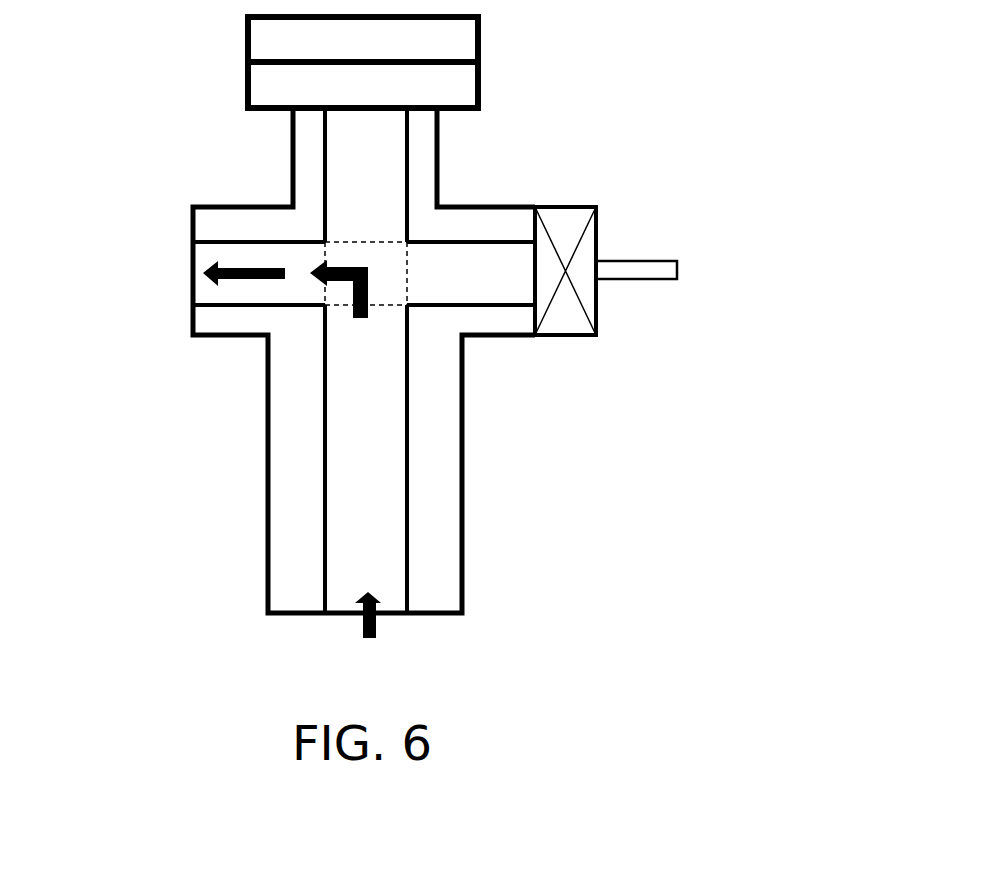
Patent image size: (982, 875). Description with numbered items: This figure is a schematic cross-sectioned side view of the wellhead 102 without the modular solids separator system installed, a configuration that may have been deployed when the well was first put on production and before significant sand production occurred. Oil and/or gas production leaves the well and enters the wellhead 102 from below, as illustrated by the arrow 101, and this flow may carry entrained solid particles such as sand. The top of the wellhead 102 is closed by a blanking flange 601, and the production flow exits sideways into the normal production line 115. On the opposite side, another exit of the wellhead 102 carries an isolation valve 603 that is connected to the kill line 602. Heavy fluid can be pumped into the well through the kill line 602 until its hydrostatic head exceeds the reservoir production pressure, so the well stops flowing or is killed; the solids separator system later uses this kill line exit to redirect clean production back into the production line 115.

The arrow 101 is at (368, 631).
The wellhead 102 is at (479, 452).
The production line 115 is at (169, 274).
The blanking flange 601 is at (495, 42).
The kill line 602 is at (675, 248).
The isolation valve 603 is at (614, 323).